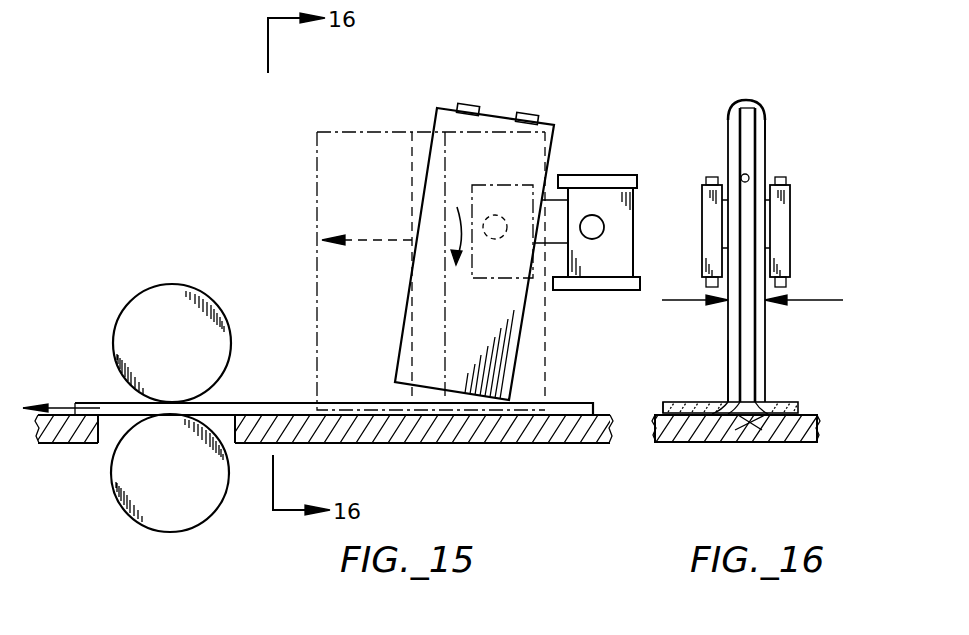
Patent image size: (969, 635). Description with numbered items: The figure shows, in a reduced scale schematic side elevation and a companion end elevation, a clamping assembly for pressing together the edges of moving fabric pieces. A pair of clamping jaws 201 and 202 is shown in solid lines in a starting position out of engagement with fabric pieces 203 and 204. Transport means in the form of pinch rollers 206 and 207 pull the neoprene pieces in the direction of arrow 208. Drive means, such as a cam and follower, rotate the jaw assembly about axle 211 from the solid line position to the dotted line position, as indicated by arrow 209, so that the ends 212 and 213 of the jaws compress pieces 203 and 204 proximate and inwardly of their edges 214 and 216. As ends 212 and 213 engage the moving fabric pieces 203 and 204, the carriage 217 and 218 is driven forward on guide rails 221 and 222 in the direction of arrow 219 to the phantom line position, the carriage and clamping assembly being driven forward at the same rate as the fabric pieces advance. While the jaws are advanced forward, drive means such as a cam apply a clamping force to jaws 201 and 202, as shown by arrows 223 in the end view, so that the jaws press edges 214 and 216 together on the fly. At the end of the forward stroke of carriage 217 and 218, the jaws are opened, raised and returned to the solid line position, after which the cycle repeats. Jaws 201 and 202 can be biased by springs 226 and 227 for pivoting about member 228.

In FIG. 15, the clamping jaw 201 is at (515, 362).
In FIG. 16, the clamping jaw 201 is at (765, 382).
In FIG. 16, the clamping jaw 202 is at (728, 365).
In FIG. 15, the fabric piece 203 is at (300, 402).
In FIG. 16, the fabric piece 203 is at (787, 402).
In FIG. 16, the fabric piece 204 is at (665, 402).
In FIG. 15, the pinch roller 206 is at (203, 298).
In FIG. 15, the pinch roller 207 is at (187, 527).
In FIG. 15, the arrow 208 is at (98, 368).
In FIG. 15, the arrow 209 is at (452, 232).
In FIG. 15, the axle 211 is at (592, 240).
In FIG. 15, the jaw end 212 is at (340, 415).
In FIG. 16, the jaw end 212 is at (790, 442).
In FIG. 16, the jaw end 213 is at (727, 415).
In FIG. 16, the edge 214 is at (730, 420).
In FIG. 16, the edge 216 is at (755, 415).
In FIG. 15, the carriage 217 is at (640, 205).
In FIG. 16, the carriage 217 is at (790, 235).
In FIG. 16, the carriage 218 is at (700, 226).
In FIG. 15, the arrow 219 is at (390, 246).
In FIG. 15, the guide rail 221 is at (613, 178).
In FIG. 16, the guide rail 221 is at (786, 180).
In FIG. 15, the guide rail 222 is at (618, 290).
In FIG. 16, the guide rail 222 is at (712, 177).
In FIG. 16, the arrows 223 is at (673, 302).
In FIG. 15, the spring 226 is at (478, 86).
In FIG. 16, the spring 226 is at (762, 100).
In FIG. 15, the spring 227 is at (553, 86).
In FIG. 16, the spring 227 is at (766, 124).
In FIG. 16, the member 228 is at (750, 172).